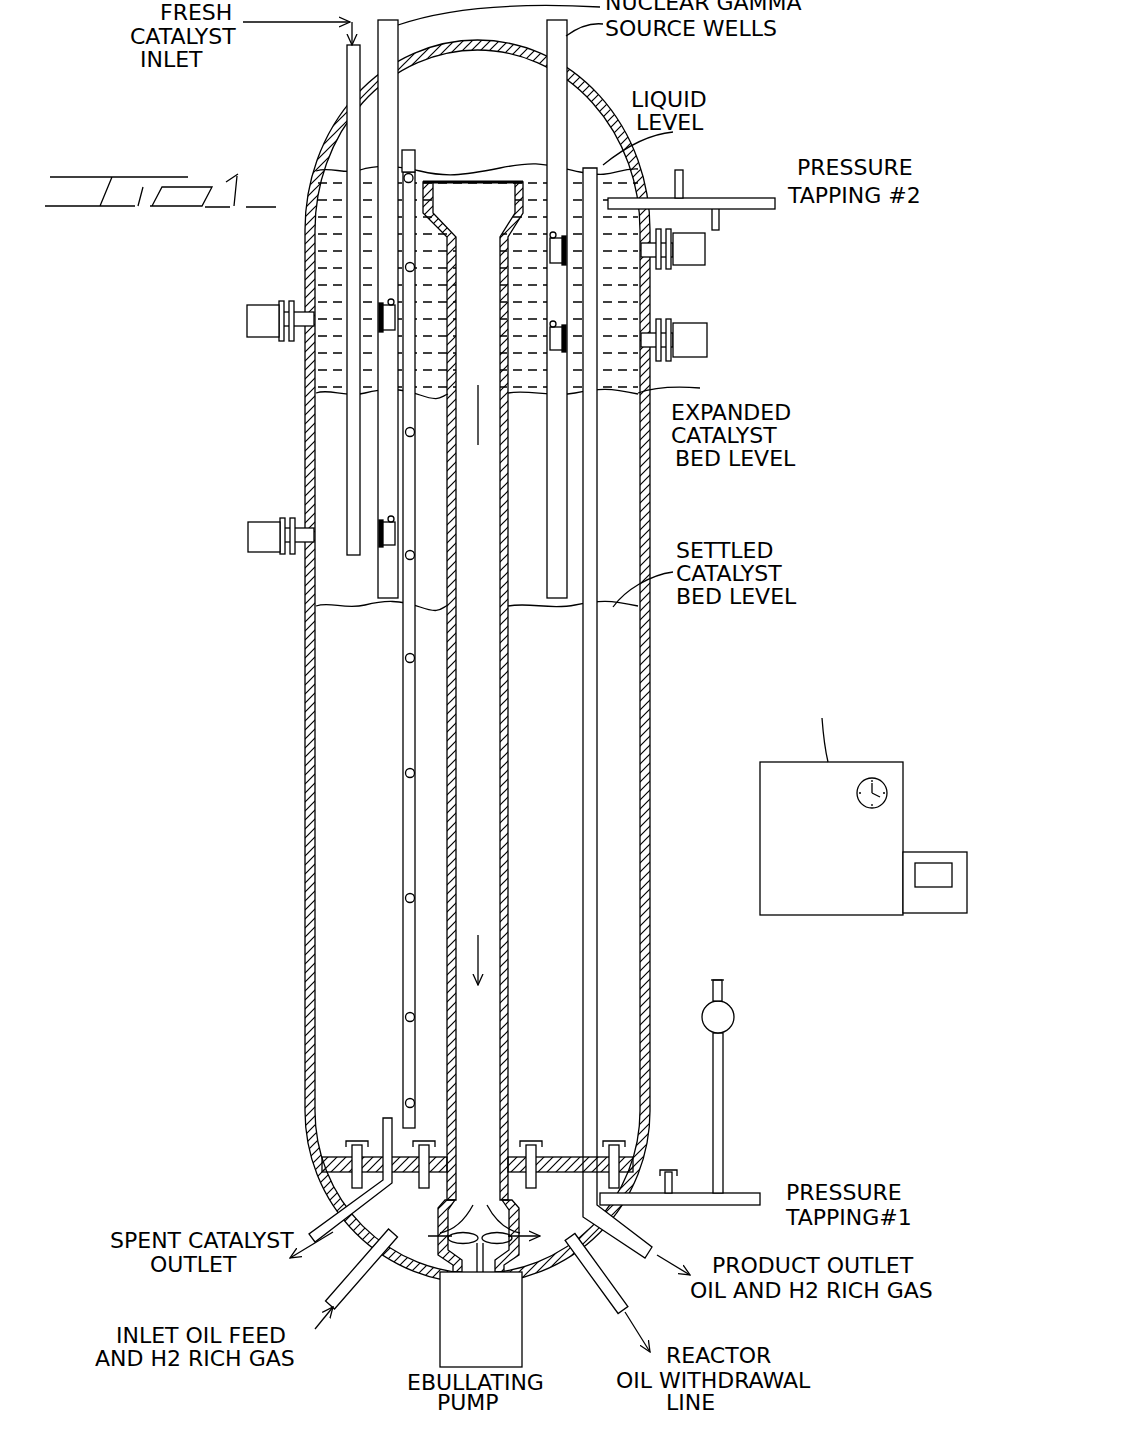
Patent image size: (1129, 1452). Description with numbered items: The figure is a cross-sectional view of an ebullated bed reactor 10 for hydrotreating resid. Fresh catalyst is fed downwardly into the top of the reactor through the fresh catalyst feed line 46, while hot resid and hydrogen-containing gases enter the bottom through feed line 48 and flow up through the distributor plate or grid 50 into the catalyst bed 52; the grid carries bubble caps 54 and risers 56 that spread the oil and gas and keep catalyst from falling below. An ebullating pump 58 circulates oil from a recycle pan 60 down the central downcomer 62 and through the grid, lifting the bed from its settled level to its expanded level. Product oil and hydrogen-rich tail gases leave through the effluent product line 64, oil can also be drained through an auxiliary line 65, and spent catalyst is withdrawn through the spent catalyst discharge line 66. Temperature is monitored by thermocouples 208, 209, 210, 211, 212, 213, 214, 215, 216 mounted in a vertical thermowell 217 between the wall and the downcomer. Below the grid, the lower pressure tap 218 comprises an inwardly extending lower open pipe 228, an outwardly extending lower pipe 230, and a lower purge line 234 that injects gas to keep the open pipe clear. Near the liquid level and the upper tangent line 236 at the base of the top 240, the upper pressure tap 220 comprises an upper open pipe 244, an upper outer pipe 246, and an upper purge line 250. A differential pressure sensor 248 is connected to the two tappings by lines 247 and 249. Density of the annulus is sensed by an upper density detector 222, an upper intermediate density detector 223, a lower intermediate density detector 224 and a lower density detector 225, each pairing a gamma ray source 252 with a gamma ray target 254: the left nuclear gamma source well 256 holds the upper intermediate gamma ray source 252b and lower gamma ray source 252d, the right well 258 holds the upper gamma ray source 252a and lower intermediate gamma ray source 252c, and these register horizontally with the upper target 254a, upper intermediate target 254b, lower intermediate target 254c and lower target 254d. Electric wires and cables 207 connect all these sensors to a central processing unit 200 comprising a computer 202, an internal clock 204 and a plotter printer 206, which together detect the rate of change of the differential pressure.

The first ebullated bed reactor 10 is at (447, 50).
The fresh catalyst feed line 46 is at (347, 75).
The feed line 48 is at (362, 1282).
The distributor plate or grid 50 is at (553, 1155).
The catalyst bed 52 is at (350, 853).
The bubble caps 54 is at (632, 1142).
The risers 56 is at (333, 1179).
The ebullating pump 58 is at (522, 1325).
The recycle pan 60 is at (524, 186).
The downcomer 62 is at (508, 683).
The effluent product line 64 is at (648, 1250).
The auxiliary line 65 is at (605, 1306).
The spent catalyst discharge line 66 is at (318, 1218).
The central processing unit 200 is at (825, 835).
The computer 202 is at (840, 910).
The internal clock 204 is at (875, 778).
The plotter printer 206 is at (925, 852).
The electric wires and cables 207 is at (823, 738).
The thermocouple 208 is at (440, 150).
The thermocouple 209 is at (405, 268).
The thermocouple 210 is at (405, 433).
The thermocouple 211 is at (405, 558).
The thermocouple 212 is at (405, 658).
The thermocouple 213 is at (405, 773).
The thermocouple 214 is at (405, 898).
The thermocouple 215 is at (405, 1017).
The thermocouple 216 is at (405, 1103).
The thermowell 217 is at (403, 712).
The lower pressure tap 218 is at (690, 1185).
The upper pressure tap 220 is at (688, 198).
The upper density detector 222 is at (706, 250).
The upper intermediate density detector 223 is at (247, 320).
The lower intermediate density detector 224 is at (708, 340).
The lower density detector 225 is at (248, 535).
The lower open pipe 228 is at (633, 1206).
The lower pipe 230 is at (740, 1193).
The lower purge line 234 is at (676, 1180).
The upper tangent line 236 is at (305, 213).
The top 240 is at (500, 52).
The upper open pipe 244 is at (657, 209).
The upper outer pipe 246 is at (753, 198).
The line 247 is at (724, 1070).
The differential pressure sensor 248 is at (734, 1017).
The line 249 is at (723, 985).
The upper purge line 250 is at (675, 183).
The gamma ray source 252 is at (397, 530).
The upper gamma ray source 252a is at (555, 264).
The upper intermediate gamma ray source 252b is at (381, 318).
The lower intermediate gamma ray source 252c is at (556, 352).
The lower gamma ray source 252d is at (383, 522).
The gamma ray target 254 is at (268, 518).
The upper target 254a is at (690, 266).
The upper intermediate target 254b is at (262, 338).
The lower intermediate target 254c is at (690, 358).
The lower target 254d is at (264, 551).
The nuclear gamma source well 256 is at (378, 378).
The nuclear gamma source well 258 is at (567, 512).